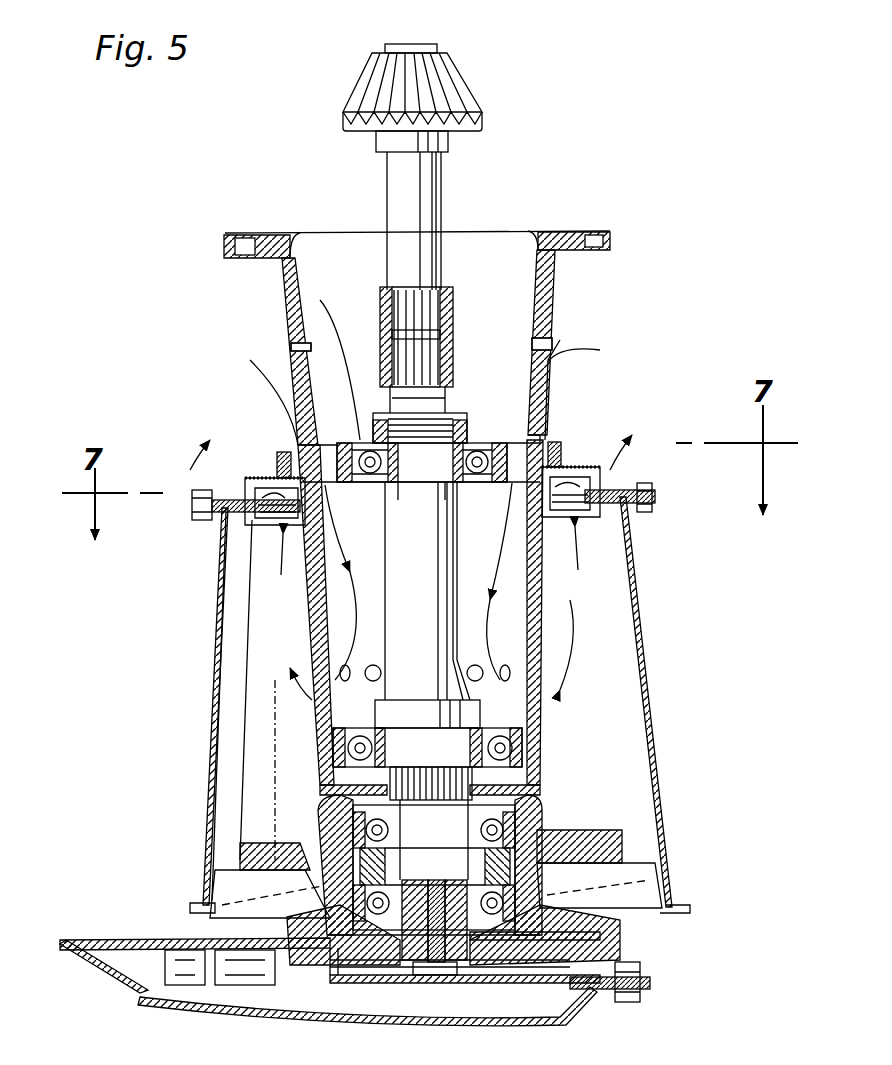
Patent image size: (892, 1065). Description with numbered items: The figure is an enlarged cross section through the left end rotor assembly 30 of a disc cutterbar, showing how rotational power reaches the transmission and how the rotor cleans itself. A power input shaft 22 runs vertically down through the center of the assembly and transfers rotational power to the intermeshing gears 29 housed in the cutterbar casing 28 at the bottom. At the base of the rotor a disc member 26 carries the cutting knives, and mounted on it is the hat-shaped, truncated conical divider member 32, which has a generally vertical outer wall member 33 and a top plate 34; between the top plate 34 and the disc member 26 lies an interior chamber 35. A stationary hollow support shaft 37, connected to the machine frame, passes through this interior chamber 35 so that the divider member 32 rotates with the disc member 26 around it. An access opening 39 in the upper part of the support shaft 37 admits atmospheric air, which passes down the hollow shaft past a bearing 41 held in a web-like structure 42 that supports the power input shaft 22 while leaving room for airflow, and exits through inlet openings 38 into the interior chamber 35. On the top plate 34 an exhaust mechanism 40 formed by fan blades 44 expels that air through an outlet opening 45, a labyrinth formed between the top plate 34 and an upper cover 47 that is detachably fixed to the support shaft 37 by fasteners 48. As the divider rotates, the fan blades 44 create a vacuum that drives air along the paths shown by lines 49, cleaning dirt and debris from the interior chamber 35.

The power input shaft 22 is at (470, 90).
The disc member 26 is at (200, 896).
The cutterbar casing 28 is at (587, 946).
The intermeshing gears 29 is at (577, 990).
The left end rotor assembly 30 is at (185, 190).
The divider member 32 is at (225, 620).
The outer wall member 33 is at (215, 670).
The top plate 34 is at (245, 502).
The interior chamber 35 is at (270, 703).
The support shaft 37 is at (548, 362).
The inlet openings 38 is at (345, 683).
The access opening 39 is at (300, 350).
The exhaust mechanism 40 is at (232, 434).
The bearing 41 is at (366, 443).
The web-like structure 42 is at (331, 415).
The fan blades 44 is at (258, 522).
The outlet opening 45 is at (204, 470).
The upper cover 47 is at (262, 478).
The fasteners 48 is at (275, 452).
The air flow path lines 49 is at (550, 350).